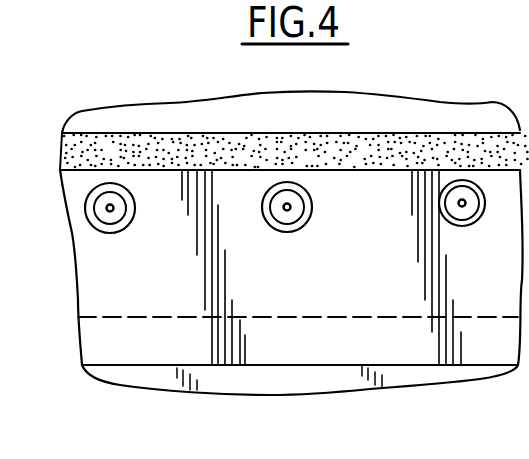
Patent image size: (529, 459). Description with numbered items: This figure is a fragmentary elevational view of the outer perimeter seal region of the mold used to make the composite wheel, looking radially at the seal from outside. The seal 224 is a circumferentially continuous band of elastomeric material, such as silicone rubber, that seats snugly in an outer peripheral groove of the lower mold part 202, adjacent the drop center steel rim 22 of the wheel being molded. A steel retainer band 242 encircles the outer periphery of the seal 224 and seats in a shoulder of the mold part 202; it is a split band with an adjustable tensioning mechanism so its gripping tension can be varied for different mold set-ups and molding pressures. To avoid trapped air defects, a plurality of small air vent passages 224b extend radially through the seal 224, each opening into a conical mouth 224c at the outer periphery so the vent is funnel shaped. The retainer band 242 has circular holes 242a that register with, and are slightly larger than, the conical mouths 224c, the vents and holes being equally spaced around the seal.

The drop center steel rim 22 is at (405, 113).
The seal 224 is at (138, 152).
The air vent passage 224b is at (113, 211).
The conical mouth 224c is at (298, 216).
The circular hole 242a is at (294, 228).
The retainer band 242 is at (303, 347).
The lower mold part 202 is at (388, 381).